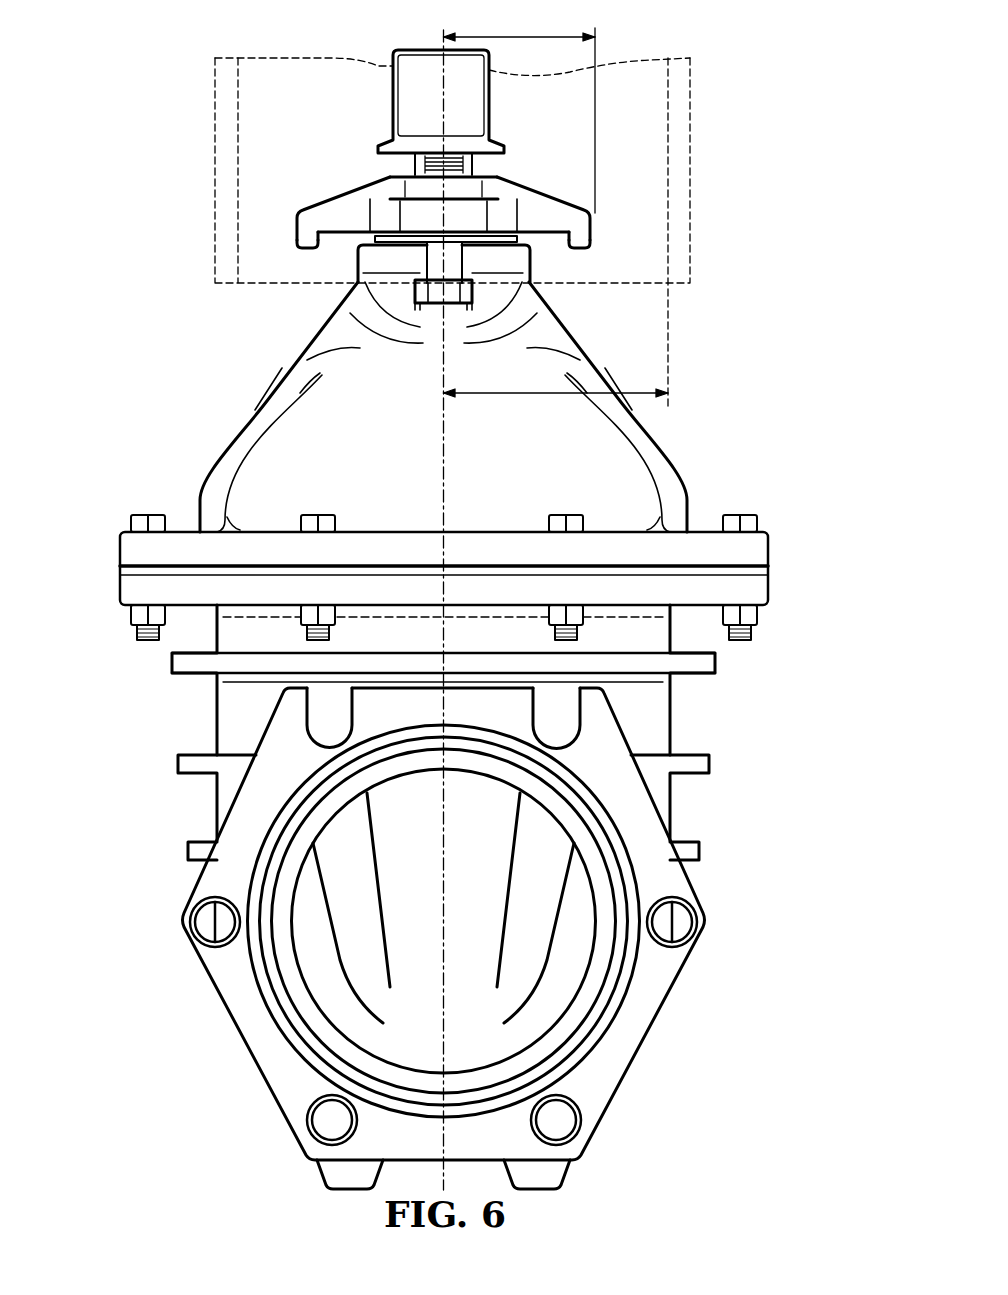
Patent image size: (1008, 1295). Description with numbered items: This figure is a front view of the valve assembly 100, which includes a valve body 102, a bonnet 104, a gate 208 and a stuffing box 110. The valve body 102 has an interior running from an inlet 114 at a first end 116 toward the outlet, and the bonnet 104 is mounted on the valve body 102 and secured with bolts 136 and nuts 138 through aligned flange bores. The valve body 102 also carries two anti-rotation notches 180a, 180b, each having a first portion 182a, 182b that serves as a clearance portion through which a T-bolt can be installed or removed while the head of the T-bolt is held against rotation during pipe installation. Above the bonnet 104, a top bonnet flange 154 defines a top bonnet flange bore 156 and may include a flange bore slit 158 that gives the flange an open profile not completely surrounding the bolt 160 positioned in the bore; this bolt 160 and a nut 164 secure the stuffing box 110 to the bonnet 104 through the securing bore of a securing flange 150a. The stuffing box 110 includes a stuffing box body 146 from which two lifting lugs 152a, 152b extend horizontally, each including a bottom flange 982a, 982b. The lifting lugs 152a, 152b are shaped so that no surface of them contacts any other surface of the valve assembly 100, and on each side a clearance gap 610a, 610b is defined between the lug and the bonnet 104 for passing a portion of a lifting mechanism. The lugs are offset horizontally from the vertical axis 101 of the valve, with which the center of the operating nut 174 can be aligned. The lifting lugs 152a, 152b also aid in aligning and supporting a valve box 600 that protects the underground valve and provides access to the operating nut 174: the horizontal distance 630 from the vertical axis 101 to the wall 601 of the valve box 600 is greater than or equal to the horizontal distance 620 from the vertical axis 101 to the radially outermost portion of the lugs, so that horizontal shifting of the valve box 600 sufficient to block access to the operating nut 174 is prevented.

The valve assembly 100 is at (781, 333).
The vertical axis 101 is at (446, 1034).
The valve body 102 is at (660, 708).
The bonnet 104 is at (600, 377).
The stuffing box 110 is at (513, 198).
The inlet 114 is at (638, 965).
The first end 116 is at (680, 868).
The bolt 136 is at (143, 516).
The nut 138 is at (130, 614).
The stuffing box body 146 is at (383, 195).
The securing flange 150a is at (591, 232).
The lifting lug 152a is at (305, 222).
The lifting lug 152b is at (587, 215).
The top bonnet flange 154 is at (362, 257).
The top bonnet flange bore 156 is at (430, 254).
The flange bore slit 158 is at (425, 262).
The bolt 160 is at (455, 305).
The nut 164 is at (452, 190).
The operating nut 174 is at (455, 68).
The anti-rotation notch 180a is at (343, 735).
The anti-rotation notch 180b is at (580, 742).
The first portion 182a is at (347, 708).
The first portion 182b is at (540, 717).
The gate 208 is at (548, 972).
The valve box 600 is at (690, 104).
The wall 601 is at (654, 118).
The clearance gap 610a is at (330, 272).
The clearance gap 610b is at (560, 288).
The horizontal distance 620 is at (520, 37).
The horizontal distance 630 is at (543, 396).
The bottom flange 982a is at (296, 260).
The bottom flange 982b is at (592, 250).